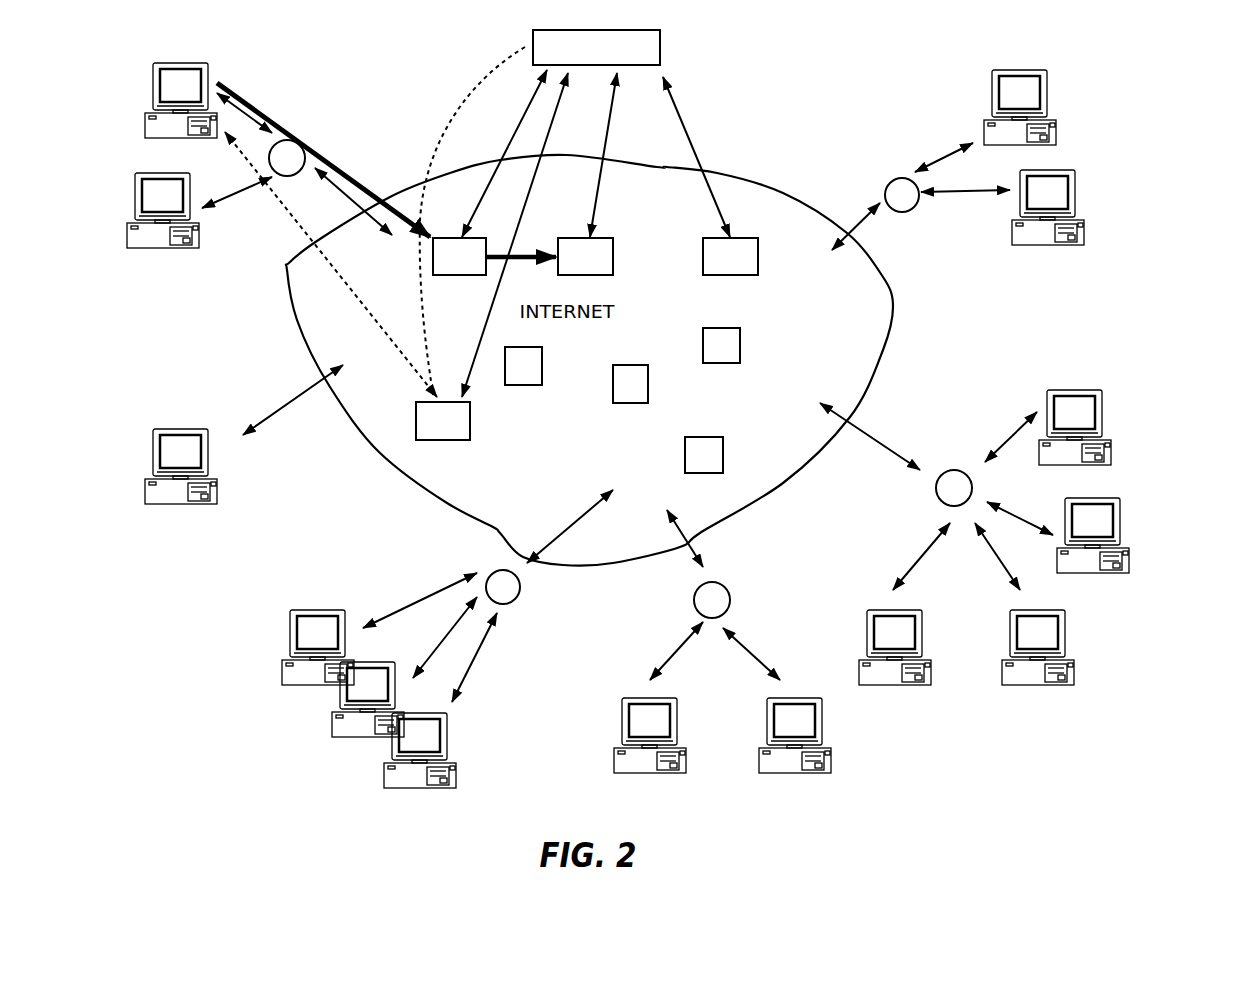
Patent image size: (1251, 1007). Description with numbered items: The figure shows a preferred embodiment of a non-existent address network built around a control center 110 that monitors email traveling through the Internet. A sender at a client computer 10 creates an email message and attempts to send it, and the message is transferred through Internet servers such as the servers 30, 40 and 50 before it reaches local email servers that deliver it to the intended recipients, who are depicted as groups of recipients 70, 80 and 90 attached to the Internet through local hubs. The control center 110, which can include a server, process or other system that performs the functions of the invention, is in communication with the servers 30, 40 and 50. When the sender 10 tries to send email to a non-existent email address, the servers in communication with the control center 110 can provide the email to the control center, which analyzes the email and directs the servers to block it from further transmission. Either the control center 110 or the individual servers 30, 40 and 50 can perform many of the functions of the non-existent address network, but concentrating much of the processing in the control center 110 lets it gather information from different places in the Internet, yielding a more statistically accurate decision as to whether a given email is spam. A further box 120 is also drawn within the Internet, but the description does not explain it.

The client computer 10 is at (155, 65).
The server 30 is at (459, 256).
The server 40 is at (585, 256).
The server 50 is at (730, 256).
The recipients 70 is at (278, 742).
The recipients 80 is at (1175, 638).
The recipients 90 is at (1125, 135).
The control center 110 is at (596, 47).
The server 120 is at (443, 421).